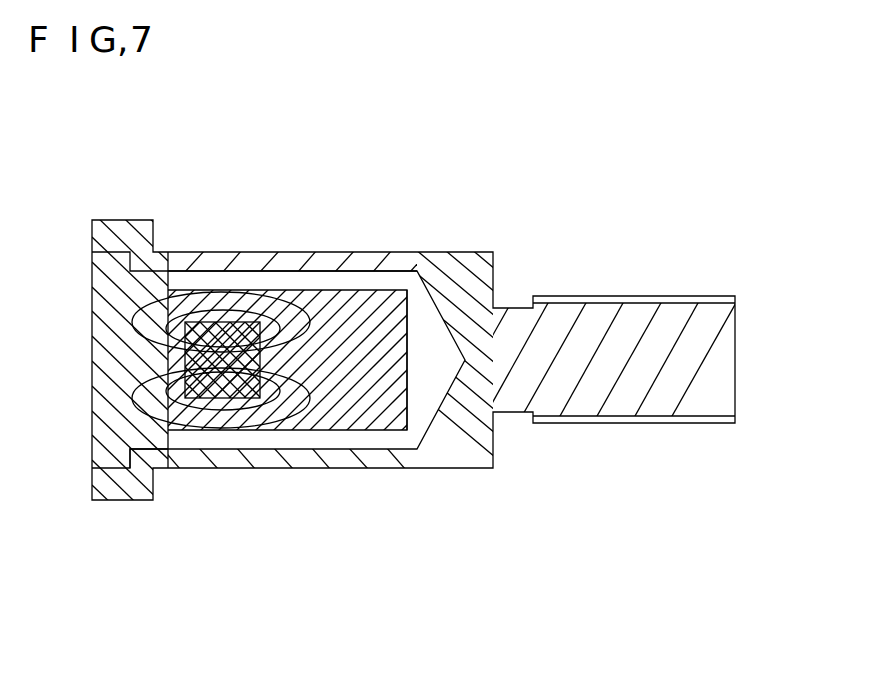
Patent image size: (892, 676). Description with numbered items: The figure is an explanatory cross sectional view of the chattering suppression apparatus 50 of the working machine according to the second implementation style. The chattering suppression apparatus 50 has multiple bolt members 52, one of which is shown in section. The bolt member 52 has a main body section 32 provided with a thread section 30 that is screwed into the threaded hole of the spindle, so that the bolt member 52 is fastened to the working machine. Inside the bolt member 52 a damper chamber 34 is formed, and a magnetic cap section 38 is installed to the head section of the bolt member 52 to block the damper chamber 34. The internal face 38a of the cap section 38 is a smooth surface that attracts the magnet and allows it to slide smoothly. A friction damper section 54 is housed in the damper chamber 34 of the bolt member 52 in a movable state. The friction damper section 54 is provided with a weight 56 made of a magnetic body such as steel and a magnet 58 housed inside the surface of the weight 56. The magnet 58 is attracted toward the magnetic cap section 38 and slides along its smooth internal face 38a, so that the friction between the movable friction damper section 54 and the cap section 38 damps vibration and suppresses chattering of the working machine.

The thread section 30 is at (618, 383).
The main body section 32 is at (487, 250).
The damper chamber 34 is at (293, 272).
The magnetic cap section 38 is at (120, 400).
The internal face of the cap 38a is at (180, 450).
The chattering suppression apparatus 50 is at (487, 118).
The bolt member 52 is at (380, 252).
The friction damper section 54 is at (335, 285).
The weight 56 is at (390, 405).
The magnet 58 is at (262, 397).